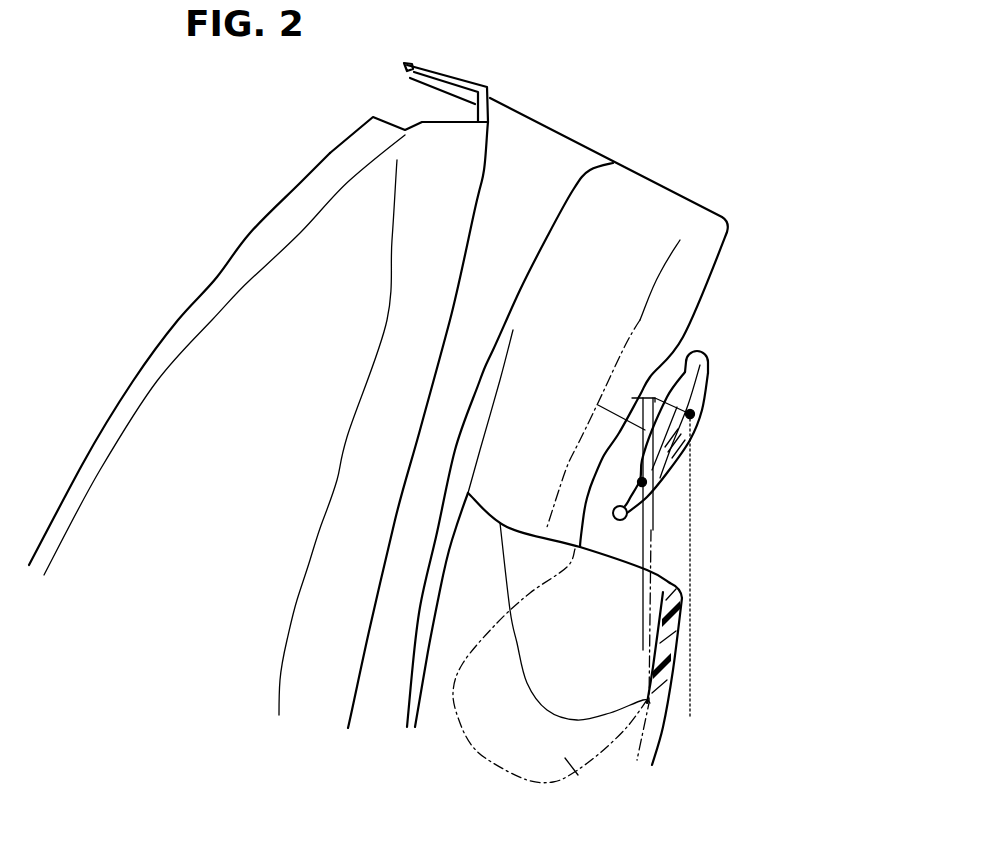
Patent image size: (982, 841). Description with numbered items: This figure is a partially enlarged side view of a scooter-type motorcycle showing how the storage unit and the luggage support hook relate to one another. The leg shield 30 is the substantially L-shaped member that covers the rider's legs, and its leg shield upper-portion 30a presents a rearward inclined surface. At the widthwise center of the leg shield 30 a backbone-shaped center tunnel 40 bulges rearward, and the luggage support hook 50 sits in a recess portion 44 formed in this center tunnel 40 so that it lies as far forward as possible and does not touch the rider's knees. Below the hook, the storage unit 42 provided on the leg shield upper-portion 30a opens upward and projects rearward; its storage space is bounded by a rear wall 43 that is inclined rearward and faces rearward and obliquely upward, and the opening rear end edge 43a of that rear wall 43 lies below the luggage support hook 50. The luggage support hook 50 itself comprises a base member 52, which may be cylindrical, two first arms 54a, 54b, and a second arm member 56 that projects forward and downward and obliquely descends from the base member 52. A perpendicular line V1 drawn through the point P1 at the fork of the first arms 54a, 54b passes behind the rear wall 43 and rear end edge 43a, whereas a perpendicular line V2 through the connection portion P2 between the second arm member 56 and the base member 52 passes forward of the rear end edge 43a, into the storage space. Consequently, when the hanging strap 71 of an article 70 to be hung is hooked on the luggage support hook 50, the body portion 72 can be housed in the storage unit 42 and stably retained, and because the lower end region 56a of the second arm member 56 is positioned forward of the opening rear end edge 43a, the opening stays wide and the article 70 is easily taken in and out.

The leg shield 30 is at (149, 418).
The leg shield upper-portion 30a is at (527, 168).
The center tunnel 40 is at (695, 270).
The storage unit 42 is at (687, 633).
The rear wall 43 is at (674, 670).
The opening rear end edge 43a is at (678, 568).
The recess portion 44 is at (652, 508).
The luggage support hook 50 is at (708, 417).
The base member 52 is at (643, 448).
The first arm 54a is at (716, 373).
The first arm 54b is at (790, 387).
The second arm member 56 is at (652, 493).
The lower end region 56a is at (630, 520).
The article to be hung 70 is at (470, 742).
The hanging strap 71 is at (605, 392).
The body portion 72 is at (577, 773).
The point corresponding to fork portion P1 is at (707, 402).
The connection portion P2 is at (640, 481).
The perpendicular line V1 is at (695, 579).
The perpendicular line V2 is at (626, 525).